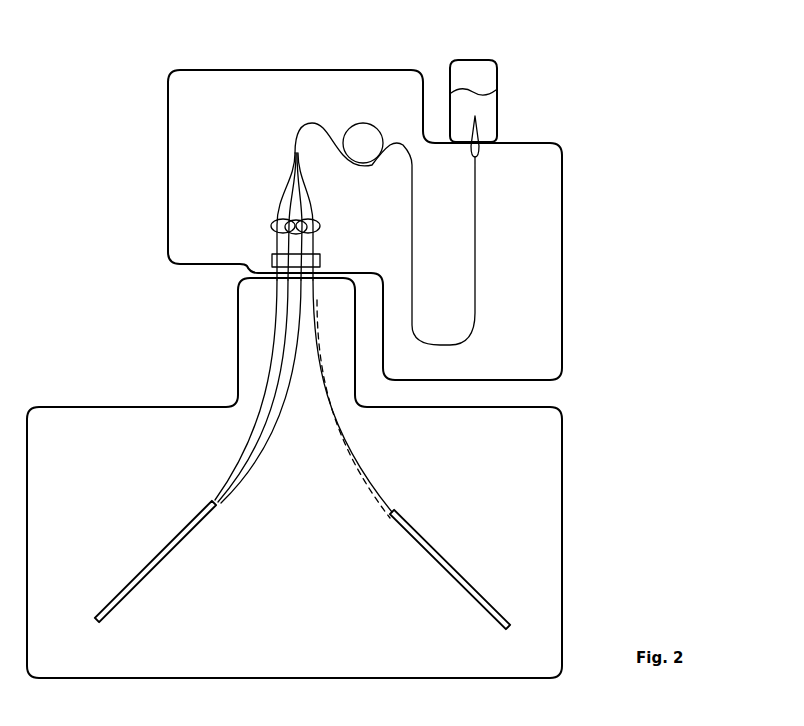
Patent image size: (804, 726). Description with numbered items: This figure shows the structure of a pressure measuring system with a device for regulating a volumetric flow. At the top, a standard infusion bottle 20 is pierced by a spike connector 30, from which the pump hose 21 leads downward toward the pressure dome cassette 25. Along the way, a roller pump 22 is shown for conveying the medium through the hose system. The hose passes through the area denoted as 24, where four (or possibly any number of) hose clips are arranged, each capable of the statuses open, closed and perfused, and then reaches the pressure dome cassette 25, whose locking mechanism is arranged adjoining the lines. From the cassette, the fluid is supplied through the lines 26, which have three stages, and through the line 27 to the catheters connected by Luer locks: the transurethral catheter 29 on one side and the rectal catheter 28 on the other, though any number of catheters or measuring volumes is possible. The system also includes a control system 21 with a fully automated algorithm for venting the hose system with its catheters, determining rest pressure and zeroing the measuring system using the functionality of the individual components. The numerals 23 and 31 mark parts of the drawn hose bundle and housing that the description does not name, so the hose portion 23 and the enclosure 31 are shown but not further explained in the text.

The standard infusion bottle 20 is at (488, 100).
The pump hose 21 is at (292, 126).
The roller pump 22 is at (387, 167).
The tubing bundle 23 is at (294, 152).
The hose clip area 24 is at (258, 224).
The pressure dome cassette 25 is at (261, 258).
The lines 26 is at (270, 392).
The line 27 is at (360, 472).
The rectal catheter 28 is at (514, 632).
The transurethral catheter 29 is at (159, 576).
The spike connector 30 is at (481, 146).
The housing 31 is at (365, 225).